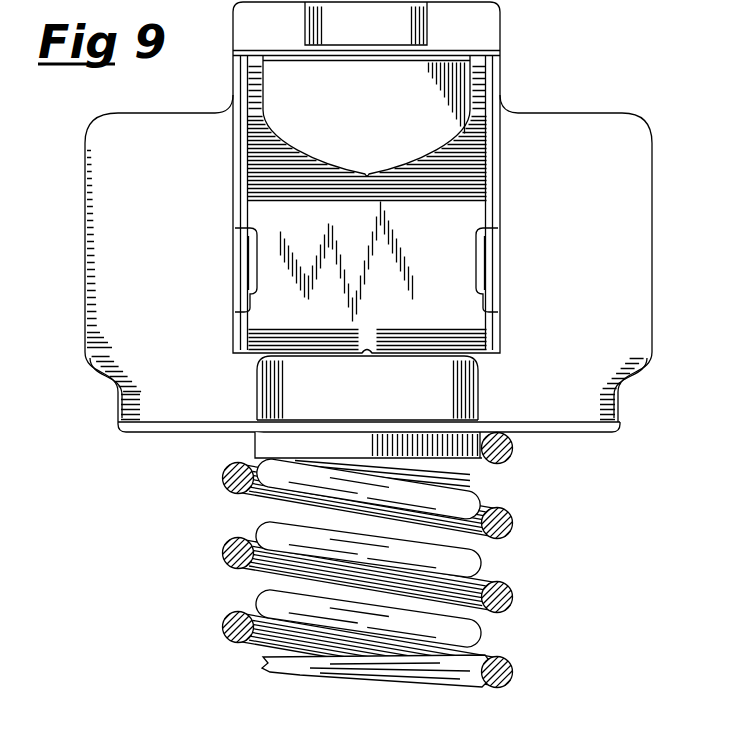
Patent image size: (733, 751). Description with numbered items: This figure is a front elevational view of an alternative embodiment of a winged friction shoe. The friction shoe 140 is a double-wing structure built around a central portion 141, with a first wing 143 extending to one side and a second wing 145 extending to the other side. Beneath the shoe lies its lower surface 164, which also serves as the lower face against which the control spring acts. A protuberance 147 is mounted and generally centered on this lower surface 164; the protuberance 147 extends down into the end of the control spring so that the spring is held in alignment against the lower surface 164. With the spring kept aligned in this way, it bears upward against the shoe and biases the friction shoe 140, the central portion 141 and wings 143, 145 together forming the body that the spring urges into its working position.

The friction shoe 140 is at (710, 178).
The central portion 141 is at (489, 143).
The first wing 143 is at (84, 207).
The second wing 145 is at (630, 303).
The protuberance 147 is at (254, 453).
The lower surface 164 is at (552, 434).